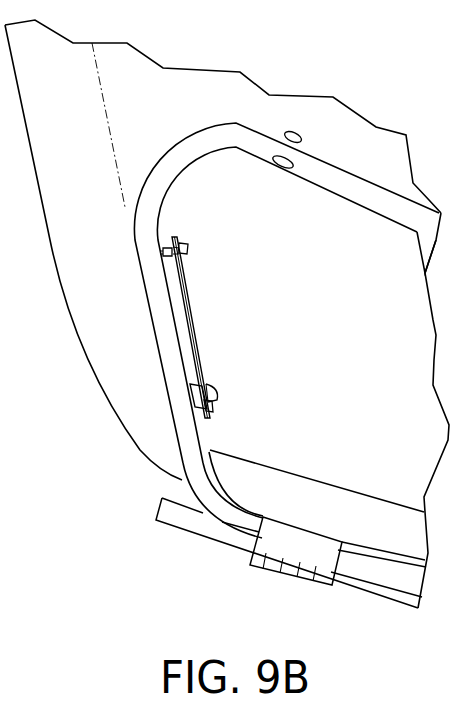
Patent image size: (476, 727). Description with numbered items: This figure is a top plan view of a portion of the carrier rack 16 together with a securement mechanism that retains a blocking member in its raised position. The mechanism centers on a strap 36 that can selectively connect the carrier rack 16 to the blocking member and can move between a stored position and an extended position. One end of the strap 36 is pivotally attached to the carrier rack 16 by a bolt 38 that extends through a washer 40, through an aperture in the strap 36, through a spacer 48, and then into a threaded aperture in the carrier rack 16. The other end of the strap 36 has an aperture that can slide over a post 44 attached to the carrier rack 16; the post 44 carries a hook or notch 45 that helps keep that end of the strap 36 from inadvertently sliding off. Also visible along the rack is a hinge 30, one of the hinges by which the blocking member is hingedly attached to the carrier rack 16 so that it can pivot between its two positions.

The carrier rack 16 is at (137, 220).
The hinge 30 is at (280, 545).
The strap 36 is at (193, 320).
The bolt 38 is at (217, 390).
The washer 40 is at (213, 408).
The post 44 is at (185, 250).
The hook or notch 45 is at (167, 247).
The spacer 48 is at (190, 393).